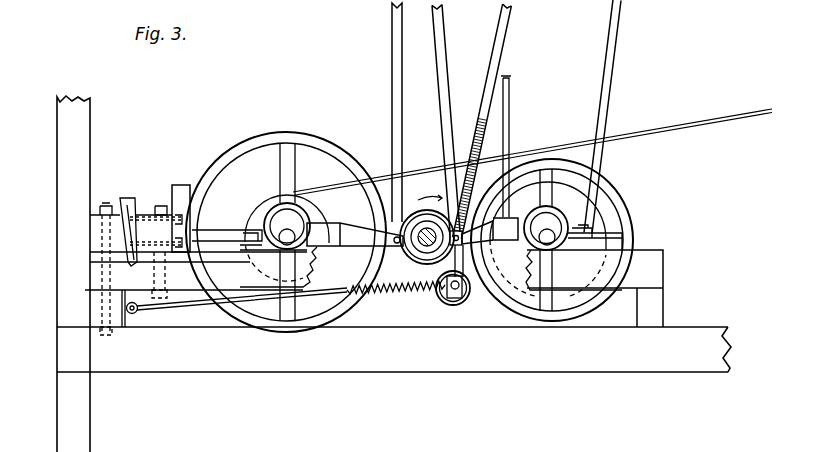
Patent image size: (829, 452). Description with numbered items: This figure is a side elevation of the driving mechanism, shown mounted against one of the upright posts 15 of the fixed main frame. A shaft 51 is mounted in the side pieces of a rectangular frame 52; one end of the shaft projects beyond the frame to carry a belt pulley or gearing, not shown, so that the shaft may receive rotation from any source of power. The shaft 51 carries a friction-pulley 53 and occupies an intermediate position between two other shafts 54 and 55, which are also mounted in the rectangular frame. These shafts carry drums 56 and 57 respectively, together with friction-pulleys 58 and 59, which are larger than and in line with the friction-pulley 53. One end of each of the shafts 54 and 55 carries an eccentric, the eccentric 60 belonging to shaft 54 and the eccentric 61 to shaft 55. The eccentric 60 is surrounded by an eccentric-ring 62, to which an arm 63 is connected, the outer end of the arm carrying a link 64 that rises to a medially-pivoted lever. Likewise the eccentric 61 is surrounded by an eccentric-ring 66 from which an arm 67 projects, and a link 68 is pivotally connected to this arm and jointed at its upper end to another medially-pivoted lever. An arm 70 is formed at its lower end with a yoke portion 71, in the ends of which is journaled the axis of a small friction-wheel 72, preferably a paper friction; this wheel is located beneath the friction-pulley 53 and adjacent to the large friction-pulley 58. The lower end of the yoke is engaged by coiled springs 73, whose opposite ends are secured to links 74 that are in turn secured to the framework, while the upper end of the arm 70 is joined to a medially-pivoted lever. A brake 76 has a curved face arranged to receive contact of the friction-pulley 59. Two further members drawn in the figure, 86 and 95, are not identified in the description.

The upright posts 15 is at (60, 380).
The shaft 51 is at (423, 229).
The rectangular frame 52 is at (655, 268).
The friction-pulley 53 is at (401, 260).
The shaft 54 is at (547, 245).
The shaft 55 is at (289, 241).
The drum 56 is at (571, 198).
The drum 57 is at (327, 213).
The friction-pulley 58 is at (628, 222).
The friction-pulley 59 is at (256, 137).
The eccentric 60 is at (547, 224).
The eccentric 61 is at (291, 214).
The eccentric-ring 62 is at (565, 240).
The arm 63 is at (497, 246).
The link 64 is at (445, 97).
The eccentric-ring 66 is at (265, 219).
The arm 67 is at (357, 237).
The link 68 is at (405, 145).
The arm 70 is at (502, 62).
The yoke portion 71 is at (472, 201).
The small friction-wheel 72 is at (470, 306).
The coiled springs 73 is at (393, 288).
The links 74 is at (192, 312).
The brake 76 is at (180, 186).
The rod 86 is at (713, 120).
The rod 95 is at (602, 100).